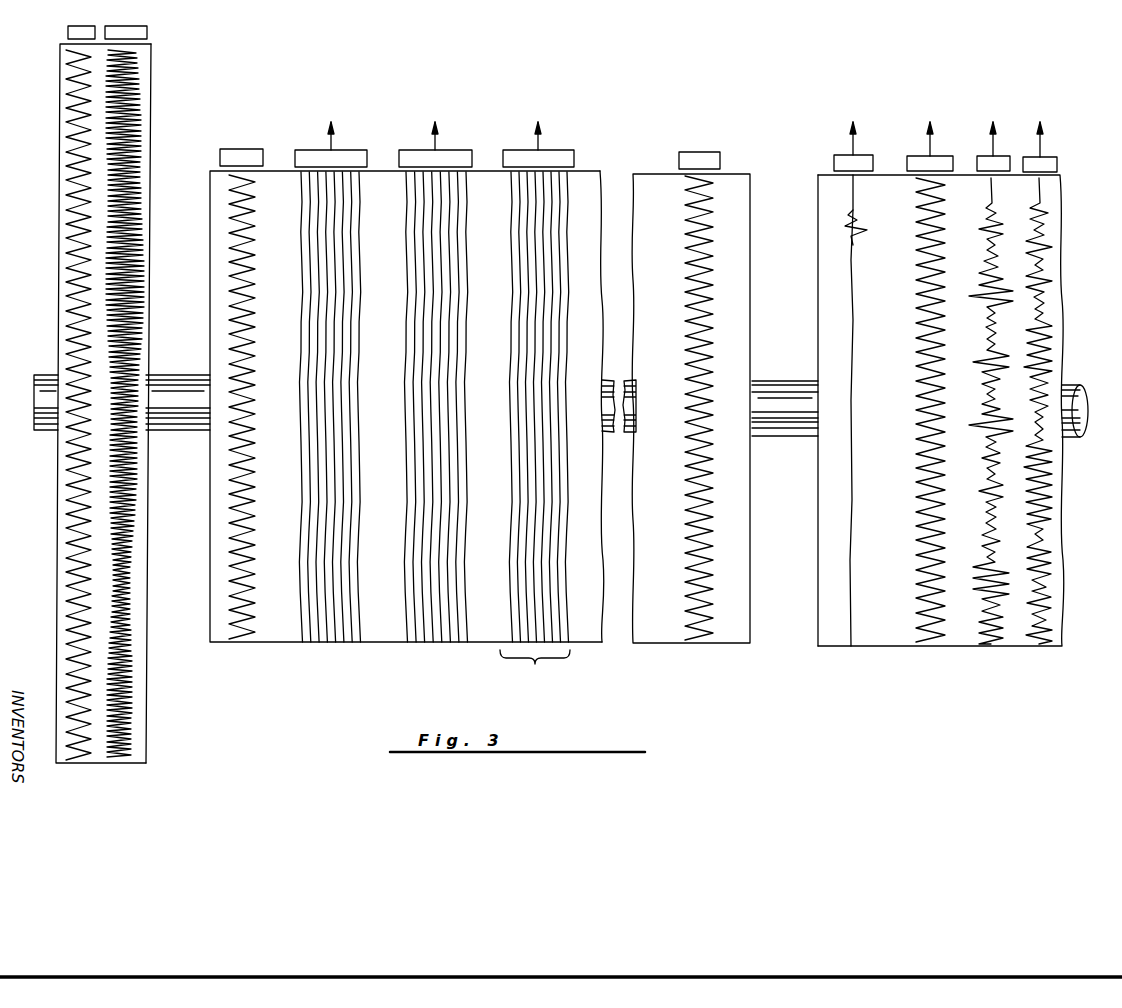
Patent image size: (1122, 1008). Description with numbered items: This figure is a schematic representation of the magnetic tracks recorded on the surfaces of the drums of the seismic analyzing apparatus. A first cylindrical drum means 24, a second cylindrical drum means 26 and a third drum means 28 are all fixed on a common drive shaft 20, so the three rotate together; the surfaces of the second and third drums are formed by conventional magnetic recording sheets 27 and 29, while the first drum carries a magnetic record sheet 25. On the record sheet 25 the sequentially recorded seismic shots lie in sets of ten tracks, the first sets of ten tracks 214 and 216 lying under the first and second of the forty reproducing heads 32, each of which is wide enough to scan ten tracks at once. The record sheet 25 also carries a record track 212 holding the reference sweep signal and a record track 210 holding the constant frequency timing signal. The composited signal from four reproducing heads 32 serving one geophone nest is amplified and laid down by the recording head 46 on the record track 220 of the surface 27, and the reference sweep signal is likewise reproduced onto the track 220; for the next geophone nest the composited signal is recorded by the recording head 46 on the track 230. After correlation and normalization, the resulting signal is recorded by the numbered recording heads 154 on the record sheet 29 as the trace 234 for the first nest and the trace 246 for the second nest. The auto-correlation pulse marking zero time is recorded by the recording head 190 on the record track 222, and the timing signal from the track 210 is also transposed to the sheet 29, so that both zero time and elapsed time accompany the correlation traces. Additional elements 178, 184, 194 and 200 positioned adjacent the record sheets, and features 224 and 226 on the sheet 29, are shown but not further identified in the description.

The drive shaft 20 is at (172, 430).
The first cylindrical drum means 24 is at (597, 170).
The magnetic record sheet 25 is at (592, 240).
The second cylindrical drum means 26 is at (56, 207).
The magnetic recording sheet 27 is at (150, 62).
The third drum means 28 is at (816, 270).
The magnetic recording sheet 29 is at (826, 575).
The reproducing heads 32 is at (548, 112).
The recording head 46 is at (150, 33).
The recording heads 154 is at (1053, 120).
The recording head 178 is at (235, 149).
The recording head 184 is at (68, 33).
The recording head 190 is at (850, 155).
The recording head 194 is at (706, 156).
The recording head 200 is at (920, 155).
The record track 210 is at (700, 645).
The record track 212 is at (232, 645).
The first set of ten tracks 214 is at (358, 650).
The set of ten tracks 216 is at (470, 650).
The record track 220 is at (58, 598).
The record track 222 is at (853, 612).
The trace deflection 224 is at (858, 238).
The recorded trace 226 is at (926, 645).
The track 230 is at (138, 745).
The trace 234 is at (985, 640).
The trace 246 is at (1034, 640).